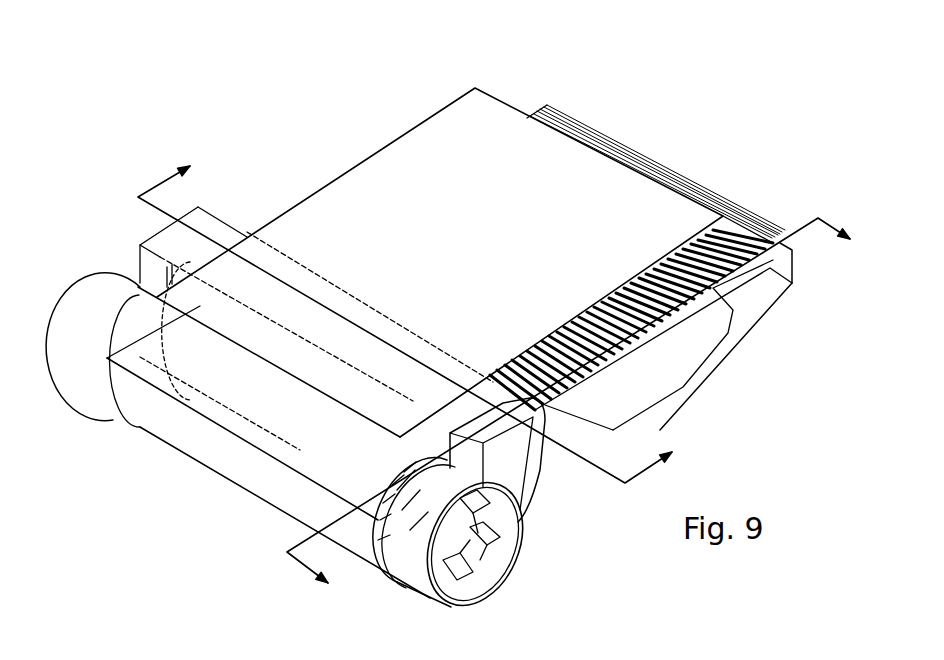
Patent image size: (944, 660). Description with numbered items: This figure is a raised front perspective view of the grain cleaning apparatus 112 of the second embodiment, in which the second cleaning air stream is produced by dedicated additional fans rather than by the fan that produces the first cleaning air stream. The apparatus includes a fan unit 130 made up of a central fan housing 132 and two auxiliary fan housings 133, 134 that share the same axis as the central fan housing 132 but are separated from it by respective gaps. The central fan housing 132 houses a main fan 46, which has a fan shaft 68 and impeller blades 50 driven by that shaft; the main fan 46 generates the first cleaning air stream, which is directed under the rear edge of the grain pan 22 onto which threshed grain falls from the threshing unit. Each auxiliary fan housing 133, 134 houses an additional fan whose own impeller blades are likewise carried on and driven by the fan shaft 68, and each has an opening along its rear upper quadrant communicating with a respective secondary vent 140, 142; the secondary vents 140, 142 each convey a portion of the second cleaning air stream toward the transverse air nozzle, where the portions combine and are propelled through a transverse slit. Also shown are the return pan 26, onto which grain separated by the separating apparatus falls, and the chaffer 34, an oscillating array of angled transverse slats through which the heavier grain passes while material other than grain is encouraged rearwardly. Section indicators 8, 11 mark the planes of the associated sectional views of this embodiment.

The grain cleaning apparatus 112 is at (153, 88).
The return pan 26 is at (504, 102).
The chaffer 34 is at (633, 165).
The grain pan 22 is at (233, 434).
The fan unit 130 is at (234, 538).
The central fan housing 132 is at (274, 493).
The auxiliary fan housing 133 is at (100, 400).
The auxiliary fan housing 134 is at (422, 588).
The secondary vent 140 is at (150, 270).
The secondary vent 142 is at (518, 493).
The main fan 46 is at (380, 540).
The impeller blades 50 is at (387, 547).
The fan shaft 68 is at (480, 547).
The section line 8- 8 is at (577, 410).
The section line 11- 11 is at (418, 317).